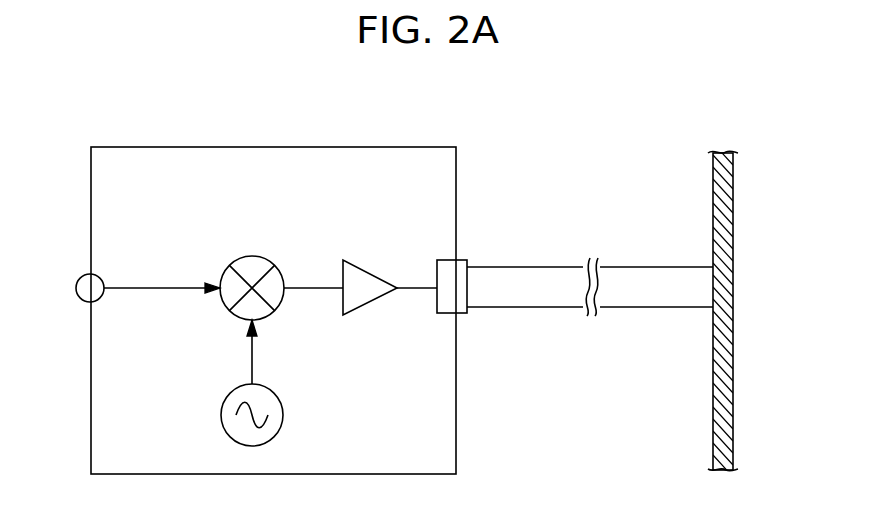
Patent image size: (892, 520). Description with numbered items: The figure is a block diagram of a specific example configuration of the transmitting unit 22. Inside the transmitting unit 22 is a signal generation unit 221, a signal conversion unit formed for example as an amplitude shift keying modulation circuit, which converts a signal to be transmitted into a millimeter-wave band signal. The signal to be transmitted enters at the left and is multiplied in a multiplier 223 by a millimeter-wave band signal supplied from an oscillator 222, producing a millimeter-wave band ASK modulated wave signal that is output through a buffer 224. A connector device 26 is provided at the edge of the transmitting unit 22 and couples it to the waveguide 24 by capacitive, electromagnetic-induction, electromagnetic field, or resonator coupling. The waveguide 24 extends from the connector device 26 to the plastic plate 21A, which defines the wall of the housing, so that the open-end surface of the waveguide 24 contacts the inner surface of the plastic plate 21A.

The transmitting unit 22 is at (276, 158).
The signal generation unit 221 is at (187, 242).
The oscillator 222 is at (284, 416).
The multiplier 223 is at (250, 265).
The buffer 224 is at (366, 293).
The connector device 26 is at (463, 266).
The waveguide 24 is at (625, 300).
The plastic plate 21A is at (727, 193).